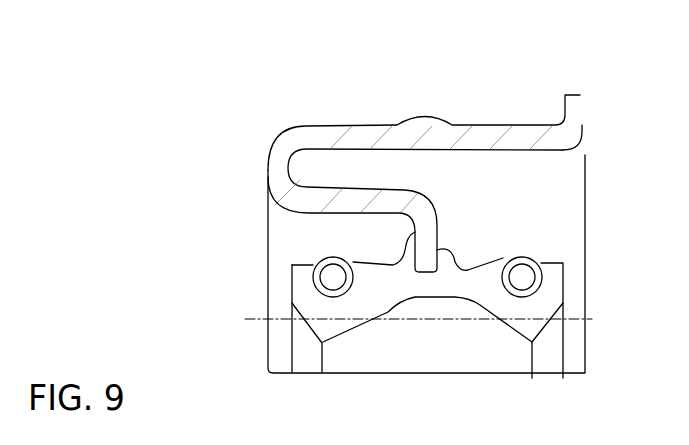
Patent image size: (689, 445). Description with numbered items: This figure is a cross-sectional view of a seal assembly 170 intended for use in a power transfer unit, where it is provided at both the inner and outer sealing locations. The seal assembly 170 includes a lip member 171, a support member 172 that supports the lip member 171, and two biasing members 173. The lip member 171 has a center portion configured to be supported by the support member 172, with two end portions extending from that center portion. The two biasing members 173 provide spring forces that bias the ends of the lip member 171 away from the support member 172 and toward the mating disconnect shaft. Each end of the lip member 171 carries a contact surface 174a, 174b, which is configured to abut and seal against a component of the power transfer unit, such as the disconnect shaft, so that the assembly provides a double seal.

The seal assembly 170 is at (198, 256).
The lip member 171 is at (468, 268).
The support member 172 is at (512, 132).
The biasing members 173 is at (329, 279).
The contact surface 174a is at (322, 345).
The contact surface 174b is at (532, 342).